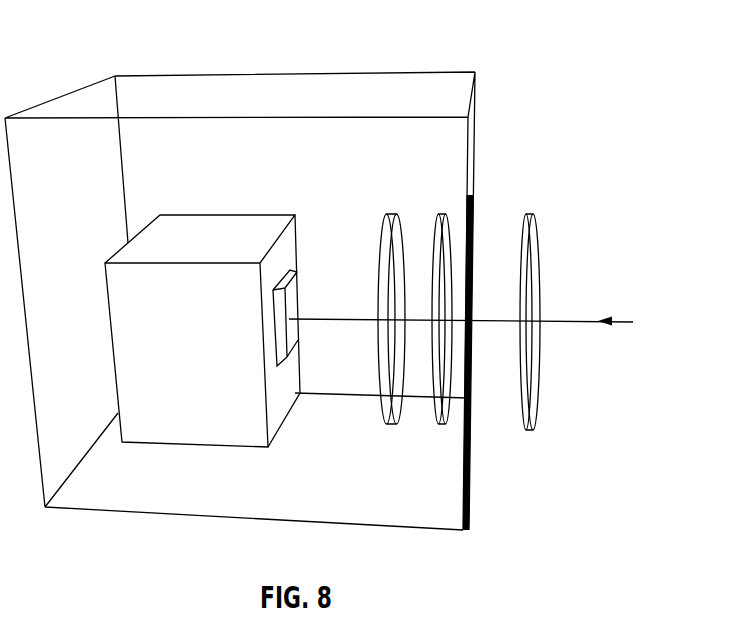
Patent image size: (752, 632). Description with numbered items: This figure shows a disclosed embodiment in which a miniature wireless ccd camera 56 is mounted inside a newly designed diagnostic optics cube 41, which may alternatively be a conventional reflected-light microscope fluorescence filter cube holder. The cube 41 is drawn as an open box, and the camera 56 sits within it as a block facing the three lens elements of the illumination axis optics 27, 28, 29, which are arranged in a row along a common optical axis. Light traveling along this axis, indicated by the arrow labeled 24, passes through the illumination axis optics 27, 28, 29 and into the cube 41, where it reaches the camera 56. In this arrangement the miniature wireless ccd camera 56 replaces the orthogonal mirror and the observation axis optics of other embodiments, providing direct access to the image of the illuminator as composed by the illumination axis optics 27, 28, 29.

The diagnostic optics cube 41 is at (522, 75).
The miniature wireless ccd camera 56 is at (112, 348).
The incoming light 24 is at (618, 322).
The illumination axis optics 29 is at (390, 425).
The illumination axis optics 28 is at (438, 427).
The illumination axis optics 27 is at (527, 430).